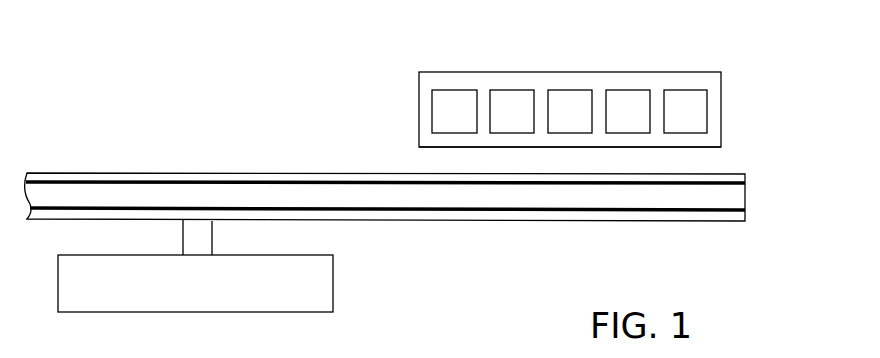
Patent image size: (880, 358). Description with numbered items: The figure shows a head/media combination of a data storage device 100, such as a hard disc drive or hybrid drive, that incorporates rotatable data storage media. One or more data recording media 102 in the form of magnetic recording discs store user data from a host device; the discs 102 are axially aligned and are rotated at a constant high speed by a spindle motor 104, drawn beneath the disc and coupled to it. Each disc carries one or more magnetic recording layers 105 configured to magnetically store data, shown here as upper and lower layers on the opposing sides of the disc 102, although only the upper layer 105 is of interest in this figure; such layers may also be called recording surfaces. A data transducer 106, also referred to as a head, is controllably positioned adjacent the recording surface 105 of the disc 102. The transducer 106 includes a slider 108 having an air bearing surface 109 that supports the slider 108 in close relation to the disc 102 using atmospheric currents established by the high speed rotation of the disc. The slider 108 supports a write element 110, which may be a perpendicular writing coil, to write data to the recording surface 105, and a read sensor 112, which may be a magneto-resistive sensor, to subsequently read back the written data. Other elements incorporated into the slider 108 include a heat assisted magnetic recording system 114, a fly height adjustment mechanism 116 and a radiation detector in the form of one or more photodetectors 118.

The data storage device 100 is at (117, 35).
The data recording media 102 is at (255, 174).
The spindle motor 104 is at (333, 283).
The magnetic recording layer 105 is at (150, 181).
The data transducer 106 is at (393, 103).
The slider 108 is at (722, 85).
The air bearing surface 109 is at (697, 147).
The write element 110 is at (454, 90).
The read sensor 112 is at (512, 90).
The heat assisted magnetic recording system 114 is at (569, 90).
The fly height adjustment mechanism 116 is at (624, 90).
The photodetector 118 is at (683, 90).